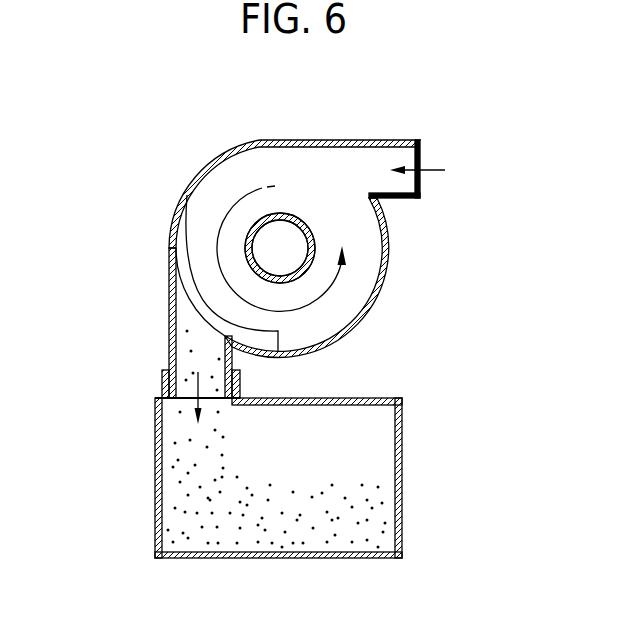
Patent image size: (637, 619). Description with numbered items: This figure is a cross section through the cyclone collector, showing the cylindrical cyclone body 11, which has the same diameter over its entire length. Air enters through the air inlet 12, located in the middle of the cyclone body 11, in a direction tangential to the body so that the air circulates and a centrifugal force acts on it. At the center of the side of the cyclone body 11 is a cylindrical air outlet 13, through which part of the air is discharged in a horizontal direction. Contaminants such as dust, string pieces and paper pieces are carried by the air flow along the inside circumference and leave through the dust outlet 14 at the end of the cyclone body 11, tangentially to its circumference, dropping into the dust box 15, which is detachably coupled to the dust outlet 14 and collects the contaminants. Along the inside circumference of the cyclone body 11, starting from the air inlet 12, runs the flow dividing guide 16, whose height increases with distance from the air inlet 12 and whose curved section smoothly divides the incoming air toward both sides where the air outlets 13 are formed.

The cyclone body 11 is at (373, 308).
The air inlet 12 is at (393, 185).
The air outlet 13 is at (288, 214).
The dust outlet 14 is at (188, 352).
The dust box 15 is at (402, 478).
The flow dividing guide 16 is at (190, 296).